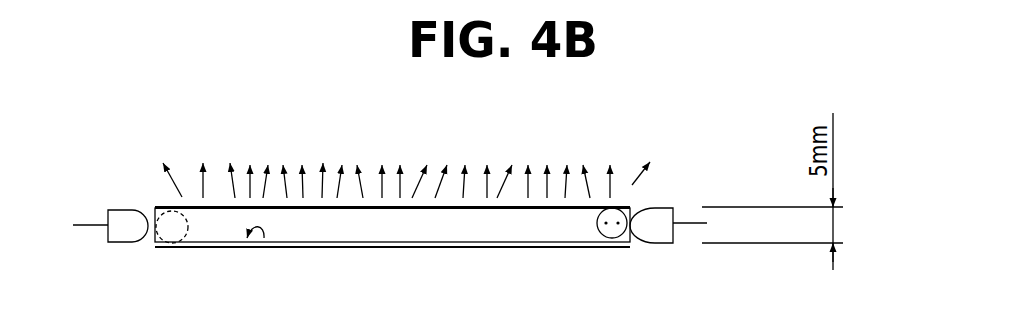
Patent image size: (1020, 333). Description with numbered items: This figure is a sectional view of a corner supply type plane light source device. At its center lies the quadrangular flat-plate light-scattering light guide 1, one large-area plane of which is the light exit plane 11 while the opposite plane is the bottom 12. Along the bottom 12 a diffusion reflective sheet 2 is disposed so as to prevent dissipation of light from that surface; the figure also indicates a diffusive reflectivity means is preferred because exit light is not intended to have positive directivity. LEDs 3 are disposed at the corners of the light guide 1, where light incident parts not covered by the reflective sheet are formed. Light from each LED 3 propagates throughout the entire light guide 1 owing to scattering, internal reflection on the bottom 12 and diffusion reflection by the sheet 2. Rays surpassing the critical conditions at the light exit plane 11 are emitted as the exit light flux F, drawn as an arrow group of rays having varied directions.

The light-scattering light guide 1 is at (587, 237).
The diffusion reflective sheet 2 is at (621, 251).
The LED 3 is at (678, 249).
The light exit plane 11 is at (593, 202).
The bottom 12 is at (263, 250).
The exit light flux F is at (663, 151).